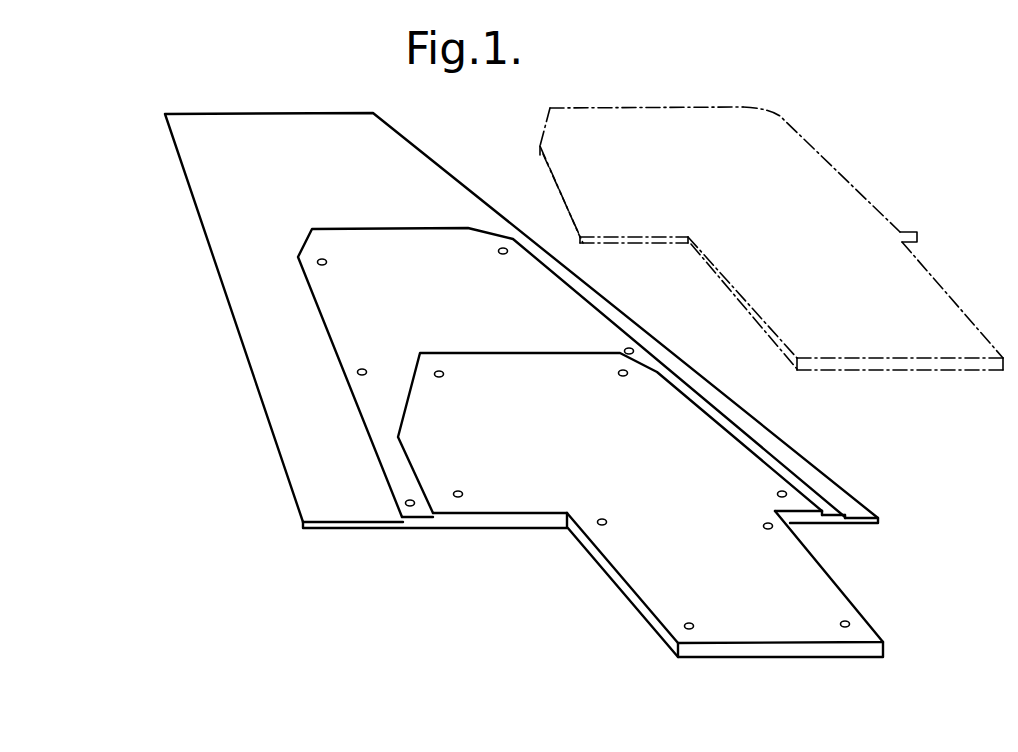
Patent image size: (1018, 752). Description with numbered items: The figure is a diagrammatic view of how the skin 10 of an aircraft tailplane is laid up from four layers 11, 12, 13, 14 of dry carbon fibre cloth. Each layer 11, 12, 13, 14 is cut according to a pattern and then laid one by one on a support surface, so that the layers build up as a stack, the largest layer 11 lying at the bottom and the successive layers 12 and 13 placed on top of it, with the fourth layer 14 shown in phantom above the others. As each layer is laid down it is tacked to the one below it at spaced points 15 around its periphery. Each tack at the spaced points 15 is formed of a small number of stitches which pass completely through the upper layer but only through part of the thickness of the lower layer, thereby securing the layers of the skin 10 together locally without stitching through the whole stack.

The skin 10 is at (255, 484).
The layer 11 is at (260, 359).
The layer 12 is at (336, 318).
The layer 13 is at (503, 356).
The layer 14 is at (872, 338).
The spaced points 15 is at (498, 252).